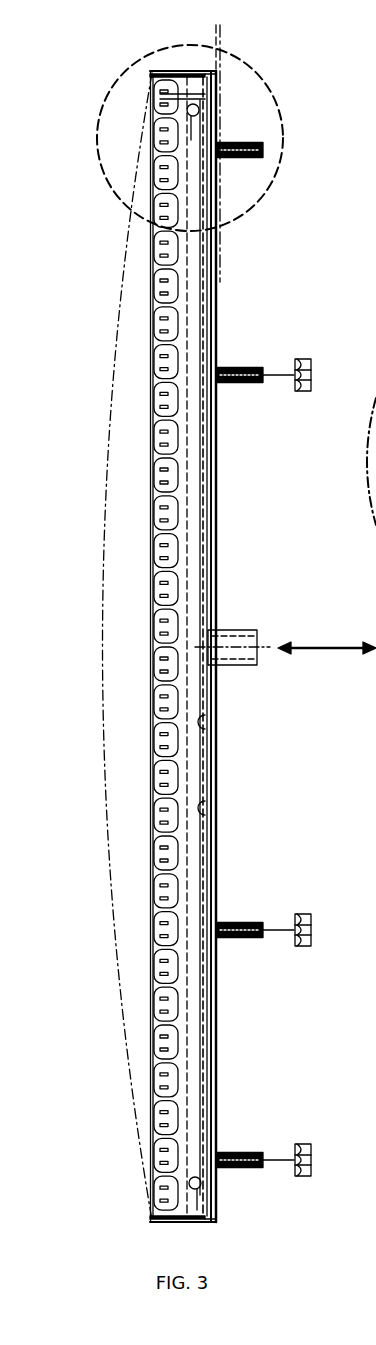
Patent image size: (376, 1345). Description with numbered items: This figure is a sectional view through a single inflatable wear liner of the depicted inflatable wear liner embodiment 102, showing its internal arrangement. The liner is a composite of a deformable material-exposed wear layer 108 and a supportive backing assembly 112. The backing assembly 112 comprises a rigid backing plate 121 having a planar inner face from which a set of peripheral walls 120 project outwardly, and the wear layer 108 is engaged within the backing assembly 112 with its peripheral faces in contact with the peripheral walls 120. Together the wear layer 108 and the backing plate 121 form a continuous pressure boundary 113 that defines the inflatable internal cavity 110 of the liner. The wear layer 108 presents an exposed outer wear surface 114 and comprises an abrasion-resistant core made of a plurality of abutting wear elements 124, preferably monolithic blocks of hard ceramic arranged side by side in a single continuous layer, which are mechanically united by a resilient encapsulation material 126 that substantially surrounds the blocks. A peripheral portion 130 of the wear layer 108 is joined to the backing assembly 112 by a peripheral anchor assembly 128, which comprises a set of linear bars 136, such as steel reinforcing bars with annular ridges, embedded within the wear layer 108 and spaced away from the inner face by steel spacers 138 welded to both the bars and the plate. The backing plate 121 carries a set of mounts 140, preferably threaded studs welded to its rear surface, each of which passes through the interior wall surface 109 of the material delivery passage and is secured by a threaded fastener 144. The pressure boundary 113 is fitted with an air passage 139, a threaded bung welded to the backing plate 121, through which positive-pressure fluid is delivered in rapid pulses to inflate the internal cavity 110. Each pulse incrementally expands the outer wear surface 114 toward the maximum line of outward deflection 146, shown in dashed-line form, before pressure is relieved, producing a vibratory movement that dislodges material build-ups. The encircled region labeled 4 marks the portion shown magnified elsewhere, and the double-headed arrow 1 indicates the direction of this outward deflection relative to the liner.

The direction arrow 1 is at (328, 647).
The detail circle 4 is at (277, 106).
The inflatable wear liner embodiment 102 is at (127, 99).
The material-exposed wear layer 108 is at (136, 457).
The interior wall surface 109 is at (247, 153).
The inflatable internal cavity 110 is at (208, 722).
The supportive backing assembly 112 is at (232, 760).
The continuous pressure boundary 113 is at (208, 808).
The exposed outer wear surface 114 is at (150, 913).
The peripheral walls 120 is at (265, 1240).
The rigid backing plate 121 is at (216, 485).
The wear elements 124 is at (151, 272).
The resilient encapsulation material 126 is at (190, 305).
The peripheral anchor assembly 128 is at (198, 240).
The peripheral portion 130 is at (103, 1218).
The linear bars 136 is at (201, 1120).
The steel spacers 138 is at (201, 1188).
The air passage 139 is at (236, 630).
The mounts 140 is at (262, 158).
The threaded fastener 144 is at (297, 359).
The maximum line of outward deflection 146 is at (113, 366).